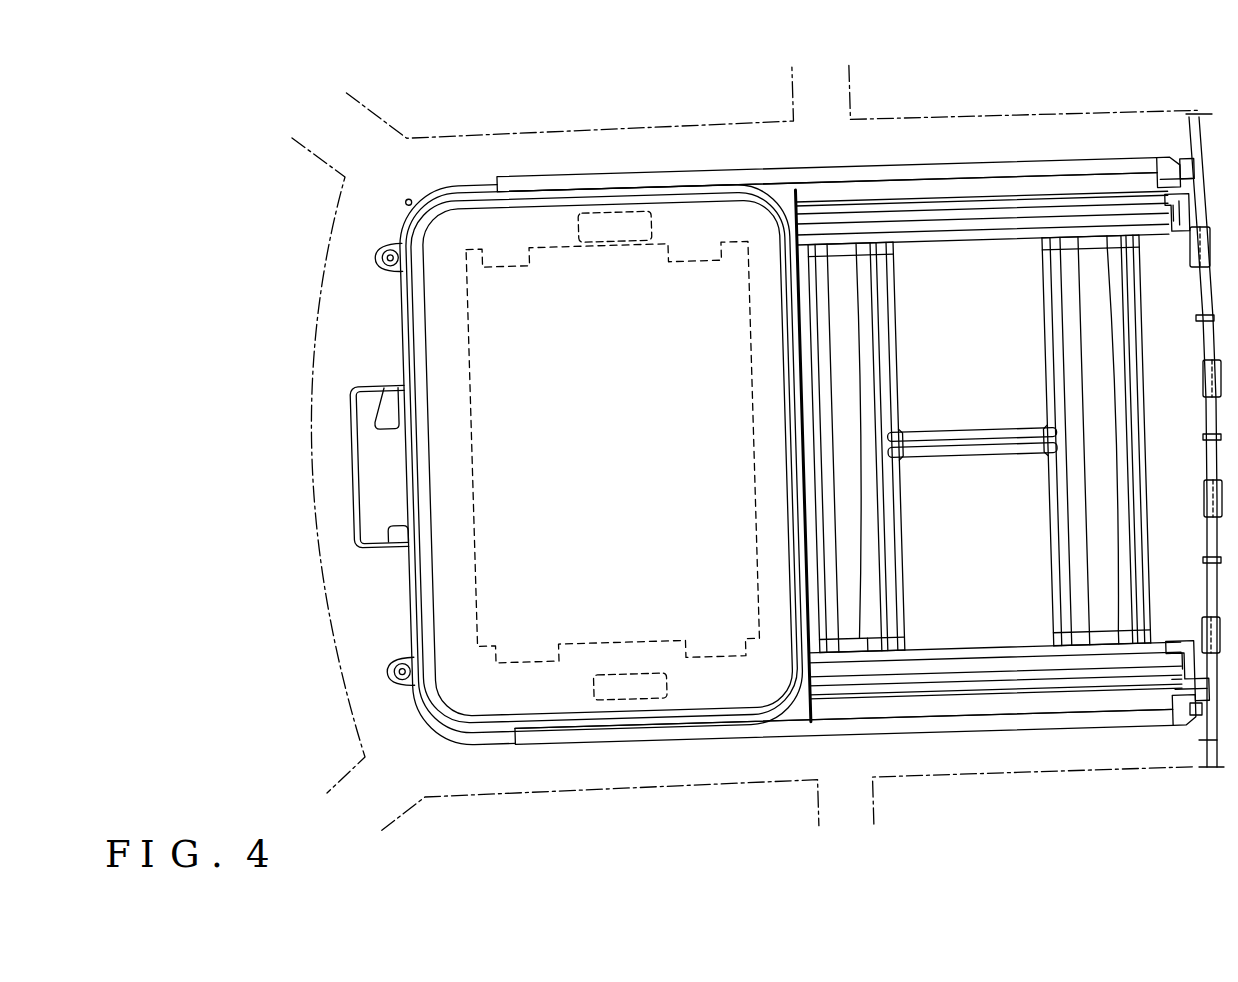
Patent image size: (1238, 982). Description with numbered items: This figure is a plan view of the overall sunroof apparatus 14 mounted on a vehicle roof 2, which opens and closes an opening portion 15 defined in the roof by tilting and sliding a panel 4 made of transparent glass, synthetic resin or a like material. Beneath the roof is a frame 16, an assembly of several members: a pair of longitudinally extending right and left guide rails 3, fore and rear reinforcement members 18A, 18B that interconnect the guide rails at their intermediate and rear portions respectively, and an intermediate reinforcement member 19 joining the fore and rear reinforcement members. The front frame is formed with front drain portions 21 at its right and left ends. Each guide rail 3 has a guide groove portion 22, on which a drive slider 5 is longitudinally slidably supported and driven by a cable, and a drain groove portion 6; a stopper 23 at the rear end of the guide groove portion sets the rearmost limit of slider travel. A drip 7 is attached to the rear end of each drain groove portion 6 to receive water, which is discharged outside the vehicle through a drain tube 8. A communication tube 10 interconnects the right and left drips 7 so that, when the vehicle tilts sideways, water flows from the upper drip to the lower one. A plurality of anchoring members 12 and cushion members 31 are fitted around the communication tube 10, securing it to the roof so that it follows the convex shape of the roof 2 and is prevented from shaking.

The vehicle roof 2 is at (488, 134).
The guide rail 3 is at (897, 165).
The panel 4 is at (728, 214).
The drive slider 5 is at (616, 212).
The drain groove portion 6 is at (968, 180).
The drip 7 is at (1179, 159).
The drain tube 8 is at (1200, 753).
The communication tube 10 is at (1206, 420).
The anchoring member 12 is at (1203, 321).
The sunroof apparatus 14 is at (364, 307).
The opening portion 15 is at (421, 325).
The frame 16 is at (1031, 158).
The fore reinforcement member 18A is at (893, 312).
The rear reinforcement member 18B is at (1047, 345).
The intermediate reinforcement member 19 is at (950, 452).
The front drain portion 21 is at (431, 736).
The guide groove portion 22 is at (968, 666).
The stopper 23 is at (1183, 645).
The cushion member 31 is at (1205, 505).